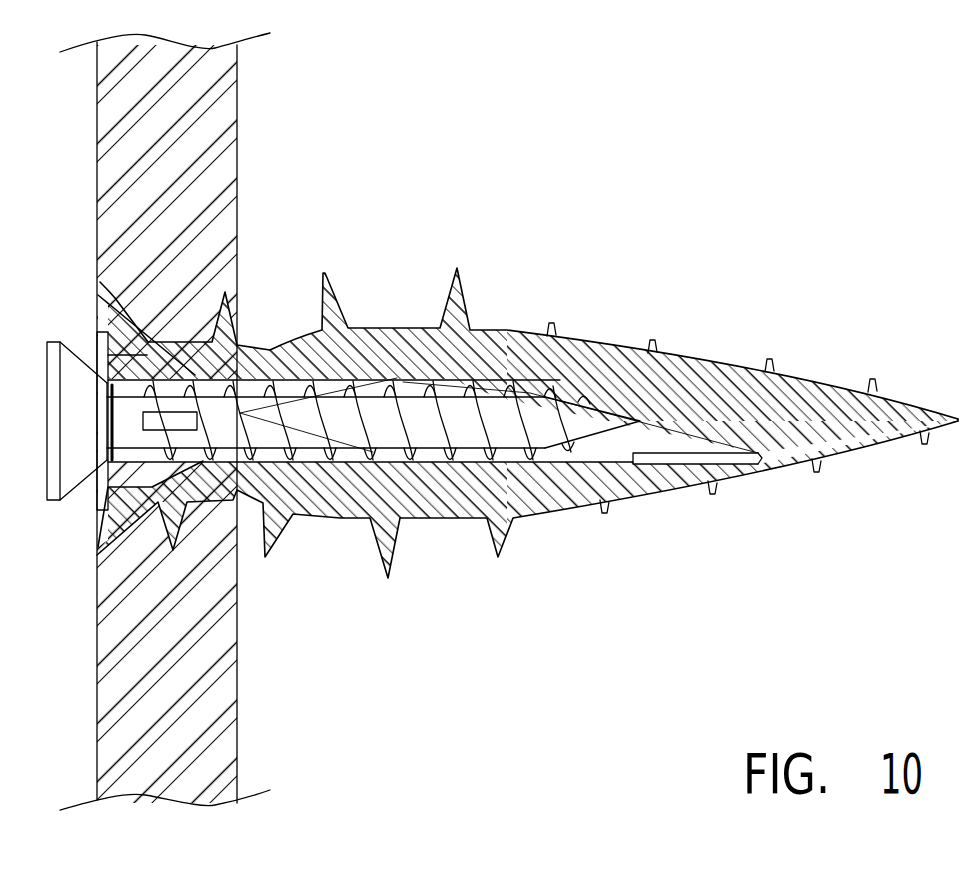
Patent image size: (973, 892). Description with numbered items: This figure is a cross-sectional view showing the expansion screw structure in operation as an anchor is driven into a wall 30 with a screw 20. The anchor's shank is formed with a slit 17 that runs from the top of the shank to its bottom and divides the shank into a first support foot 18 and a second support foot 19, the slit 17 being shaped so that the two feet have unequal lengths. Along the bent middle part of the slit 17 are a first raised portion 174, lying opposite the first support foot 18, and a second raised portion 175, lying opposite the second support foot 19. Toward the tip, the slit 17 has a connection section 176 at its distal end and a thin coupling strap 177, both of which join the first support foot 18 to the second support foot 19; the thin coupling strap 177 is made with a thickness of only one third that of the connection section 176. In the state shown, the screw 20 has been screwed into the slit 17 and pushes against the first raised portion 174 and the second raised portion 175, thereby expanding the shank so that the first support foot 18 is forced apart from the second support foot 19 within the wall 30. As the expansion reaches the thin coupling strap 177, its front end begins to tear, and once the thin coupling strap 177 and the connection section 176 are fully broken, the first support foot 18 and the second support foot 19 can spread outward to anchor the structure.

The slit 17 is at (603, 453).
The first support foot 18 is at (688, 367).
The second support foot 19 is at (647, 482).
The screw 20 is at (499, 407).
The wall 30 is at (232, 727).
The first raised portion 174 is at (472, 467).
The second raised portion 175 is at (403, 385).
The connection section 176 is at (778, 462).
The thin coupling strap 177 is at (695, 457).